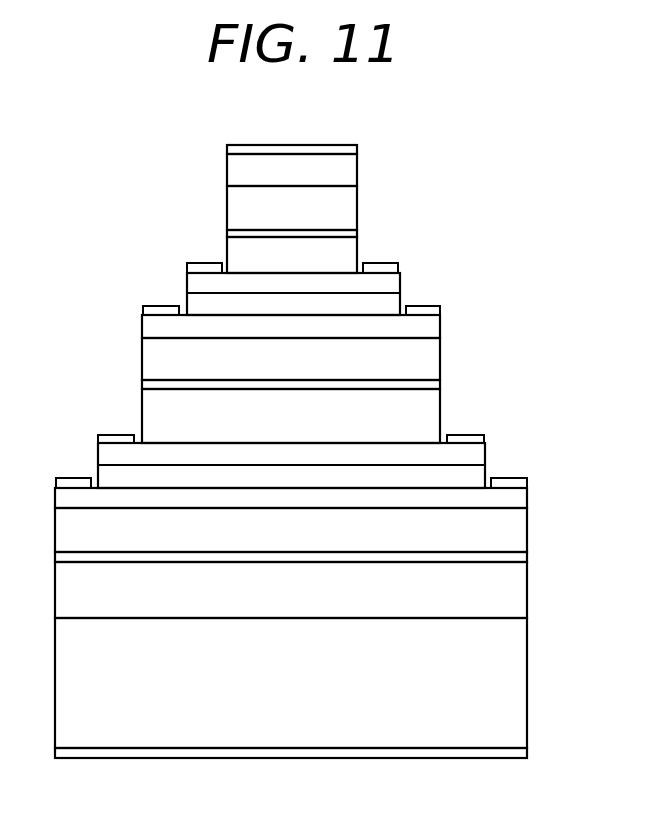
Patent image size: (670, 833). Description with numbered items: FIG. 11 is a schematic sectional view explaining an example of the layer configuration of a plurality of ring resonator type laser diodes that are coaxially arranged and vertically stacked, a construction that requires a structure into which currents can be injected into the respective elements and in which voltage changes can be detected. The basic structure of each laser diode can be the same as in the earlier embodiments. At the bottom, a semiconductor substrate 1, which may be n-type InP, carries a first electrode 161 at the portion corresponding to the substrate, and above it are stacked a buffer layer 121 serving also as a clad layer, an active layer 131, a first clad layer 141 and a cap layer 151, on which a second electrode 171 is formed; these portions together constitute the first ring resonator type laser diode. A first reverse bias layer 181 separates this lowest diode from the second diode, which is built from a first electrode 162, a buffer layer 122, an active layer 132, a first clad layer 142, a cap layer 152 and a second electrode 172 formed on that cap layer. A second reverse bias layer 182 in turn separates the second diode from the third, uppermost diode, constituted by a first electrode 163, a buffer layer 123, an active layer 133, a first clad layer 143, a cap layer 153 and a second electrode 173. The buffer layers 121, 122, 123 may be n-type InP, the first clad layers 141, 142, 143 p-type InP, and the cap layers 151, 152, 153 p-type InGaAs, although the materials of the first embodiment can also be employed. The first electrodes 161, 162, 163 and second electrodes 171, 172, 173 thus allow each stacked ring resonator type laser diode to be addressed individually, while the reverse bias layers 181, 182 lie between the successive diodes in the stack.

The semiconductor substrate 1 is at (523, 667).
The buffer layer 121 is at (523, 595).
The buffer layer 122 is at (436, 412).
The buffer layer 123 is at (393, 285).
The active layer 131 is at (523, 558).
The active layer 132 is at (436, 380).
The active layer 133 is at (352, 234).
The first clad layer 141 is at (523, 528).
The first clad layer 142 is at (436, 355).
The first clad layer 143 is at (352, 196).
The cap layer 151 is at (523, 502).
The cap layer 152 is at (436, 330).
The cap layer 153 is at (352, 162).
The first electrode 161 is at (472, 753).
The first electrode 162 is at (115, 436).
The first electrode 163 is at (203, 266).
The second electrode 171 is at (73, 478).
The second electrode 172 is at (160, 306).
The second electrode 173 is at (359, 145).
The first reverse bias layer 181 is at (475, 475).
The second reverse bias layer 182 is at (392, 302).